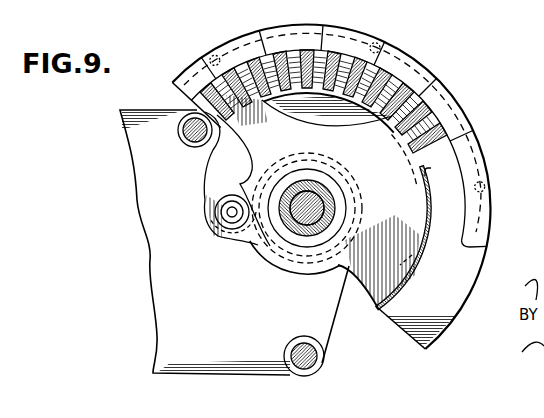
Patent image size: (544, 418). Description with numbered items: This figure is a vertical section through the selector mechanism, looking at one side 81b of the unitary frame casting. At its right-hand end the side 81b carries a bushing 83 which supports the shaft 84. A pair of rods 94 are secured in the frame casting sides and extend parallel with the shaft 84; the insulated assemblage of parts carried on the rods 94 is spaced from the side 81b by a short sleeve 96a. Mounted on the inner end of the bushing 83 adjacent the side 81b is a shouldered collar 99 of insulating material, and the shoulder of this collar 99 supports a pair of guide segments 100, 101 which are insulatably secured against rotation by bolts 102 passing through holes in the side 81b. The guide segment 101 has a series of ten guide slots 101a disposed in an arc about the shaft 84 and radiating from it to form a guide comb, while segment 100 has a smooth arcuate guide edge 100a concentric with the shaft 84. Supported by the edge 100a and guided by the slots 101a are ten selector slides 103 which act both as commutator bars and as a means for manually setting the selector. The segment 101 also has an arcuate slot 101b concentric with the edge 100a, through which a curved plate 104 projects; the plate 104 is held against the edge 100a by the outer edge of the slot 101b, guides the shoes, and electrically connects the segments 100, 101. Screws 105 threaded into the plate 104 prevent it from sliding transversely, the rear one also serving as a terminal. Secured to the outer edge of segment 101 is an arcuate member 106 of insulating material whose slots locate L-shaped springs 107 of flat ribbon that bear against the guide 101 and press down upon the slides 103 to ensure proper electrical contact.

The side of frame casting 81b is at (185, 299).
The bushing 83 is at (328, 203).
The shaft 84 is at (314, 205).
The rod 94 is at (187, 143).
The short sleeve 96a is at (186, 130).
The shouldered collar 99 is at (283, 236).
The guide segment 100 is at (372, 252).
The arcuate guide edge 100a is at (421, 189).
The guide segment 101 is at (454, 268).
The guide slot 101a is at (340, 68).
The arcuate slot 101b is at (411, 262).
The bolt 102 is at (231, 215).
The selector slide 103 is at (207, 112).
The curved plate 104 is at (433, 215).
The screw 105 is at (417, 317).
The arcuate member 106 is at (473, 200).
The L-shaped spring 107 is at (268, 78).